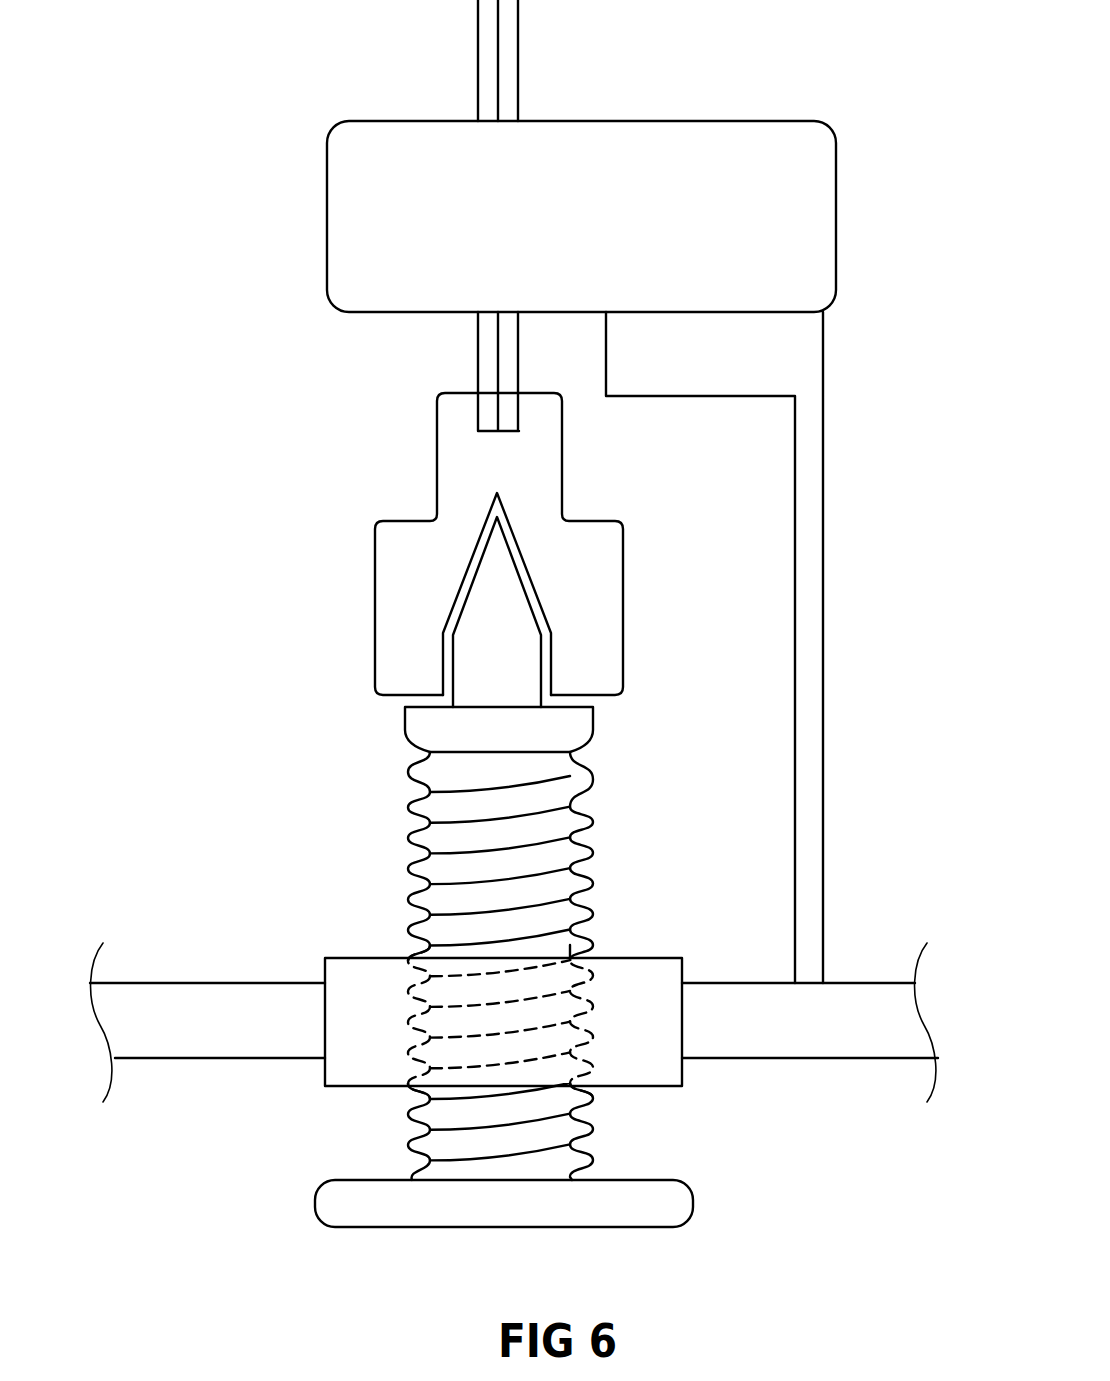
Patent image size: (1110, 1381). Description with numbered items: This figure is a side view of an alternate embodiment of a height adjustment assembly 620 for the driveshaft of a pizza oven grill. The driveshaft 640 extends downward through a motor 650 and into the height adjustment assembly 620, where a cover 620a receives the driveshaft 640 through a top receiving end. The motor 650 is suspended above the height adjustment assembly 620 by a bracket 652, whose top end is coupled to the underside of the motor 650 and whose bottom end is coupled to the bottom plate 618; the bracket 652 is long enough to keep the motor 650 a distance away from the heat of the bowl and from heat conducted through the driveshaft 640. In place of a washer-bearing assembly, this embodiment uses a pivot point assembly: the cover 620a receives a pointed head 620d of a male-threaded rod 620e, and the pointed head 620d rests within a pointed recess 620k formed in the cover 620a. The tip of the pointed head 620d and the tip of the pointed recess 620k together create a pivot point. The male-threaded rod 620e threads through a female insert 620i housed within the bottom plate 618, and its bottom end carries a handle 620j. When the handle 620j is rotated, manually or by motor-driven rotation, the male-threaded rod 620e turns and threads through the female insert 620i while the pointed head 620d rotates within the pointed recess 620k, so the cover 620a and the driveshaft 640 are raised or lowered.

The bottom plate 618 is at (220, 1037).
The height adjustment assembly 620 is at (265, 443).
The cover 620a is at (437, 484).
The pointed head 620d is at (497, 657).
The male-threaded rod 620e is at (578, 801).
The female insert 620i is at (648, 1075).
The handle 620j is at (688, 1205).
The pointed recess 620k is at (512, 518).
The driveshaft 640 is at (488, 41).
The motor 650 is at (348, 194).
The bracket 652 is at (808, 550).